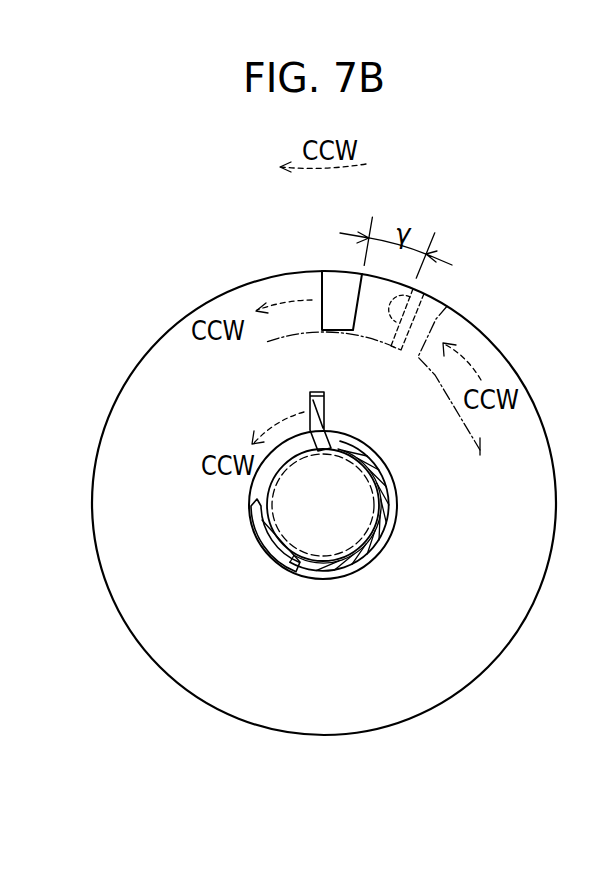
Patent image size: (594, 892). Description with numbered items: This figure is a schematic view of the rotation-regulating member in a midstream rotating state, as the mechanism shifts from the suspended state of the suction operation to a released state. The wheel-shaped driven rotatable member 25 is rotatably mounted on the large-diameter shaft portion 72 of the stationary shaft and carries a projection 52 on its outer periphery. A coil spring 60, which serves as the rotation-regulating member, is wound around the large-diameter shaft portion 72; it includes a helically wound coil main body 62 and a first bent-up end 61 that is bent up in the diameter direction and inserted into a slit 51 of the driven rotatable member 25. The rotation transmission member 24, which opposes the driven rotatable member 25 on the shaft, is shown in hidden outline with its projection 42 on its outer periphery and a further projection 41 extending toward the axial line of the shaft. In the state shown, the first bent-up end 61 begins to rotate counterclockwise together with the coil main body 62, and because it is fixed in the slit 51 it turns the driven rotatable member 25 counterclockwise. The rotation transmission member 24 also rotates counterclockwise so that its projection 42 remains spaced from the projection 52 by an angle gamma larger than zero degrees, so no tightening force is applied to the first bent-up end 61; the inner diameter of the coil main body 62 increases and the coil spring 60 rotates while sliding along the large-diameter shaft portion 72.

The rotation transmission member 24 is at (480, 444).
The driven rotatable member 25 is at (168, 328).
The projection 41 is at (470, 325).
The projection 42 is at (443, 302).
The slit 51 is at (320, 390).
The projection 52 is at (335, 278).
The coil spring 60 is at (365, 568).
The first bent-up end 61 is at (323, 424).
The coil main body 62 is at (386, 505).
The large-diameter shaft portion 72 is at (315, 560).